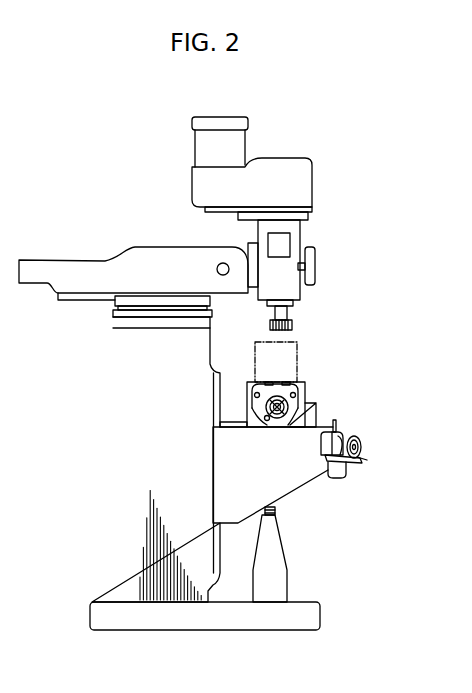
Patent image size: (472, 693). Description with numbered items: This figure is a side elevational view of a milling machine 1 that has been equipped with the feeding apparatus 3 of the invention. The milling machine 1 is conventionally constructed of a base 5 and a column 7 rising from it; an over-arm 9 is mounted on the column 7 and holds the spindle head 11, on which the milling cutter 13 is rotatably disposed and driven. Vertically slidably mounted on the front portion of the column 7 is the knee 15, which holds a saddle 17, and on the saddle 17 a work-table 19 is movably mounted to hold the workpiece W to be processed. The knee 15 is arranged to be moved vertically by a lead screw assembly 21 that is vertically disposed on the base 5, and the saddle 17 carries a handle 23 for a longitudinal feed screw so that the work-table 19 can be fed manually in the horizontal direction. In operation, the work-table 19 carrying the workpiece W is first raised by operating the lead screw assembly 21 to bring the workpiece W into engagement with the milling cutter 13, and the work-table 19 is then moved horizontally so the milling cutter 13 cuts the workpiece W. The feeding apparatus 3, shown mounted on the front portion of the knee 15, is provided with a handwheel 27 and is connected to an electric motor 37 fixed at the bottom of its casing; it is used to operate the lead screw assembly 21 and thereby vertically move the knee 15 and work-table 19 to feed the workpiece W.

The milling machine 1 is at (101, 221).
The feeding apparatus 3 is at (353, 427).
The base 5 is at (203, 624).
The column 7 is at (102, 524).
The over-arm 9 is at (92, 265).
The spindle head 11 is at (317, 200).
The milling cutter 13 is at (298, 322).
The knee 15 is at (290, 487).
The saddle 17 is at (311, 418).
The work-table 19 is at (300, 383).
The lead screw assembly 21 is at (278, 512).
The handle 23 is at (280, 424).
The handwheel 27 is at (362, 442).
The electric motor 37 is at (345, 473).
The workpiece W is at (297, 350).